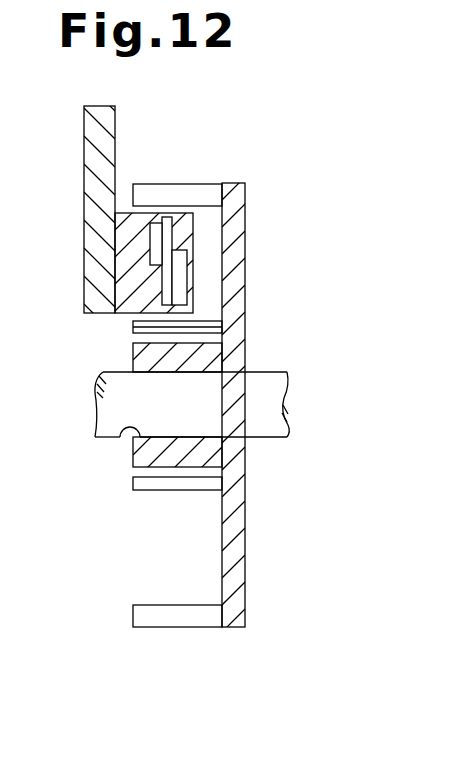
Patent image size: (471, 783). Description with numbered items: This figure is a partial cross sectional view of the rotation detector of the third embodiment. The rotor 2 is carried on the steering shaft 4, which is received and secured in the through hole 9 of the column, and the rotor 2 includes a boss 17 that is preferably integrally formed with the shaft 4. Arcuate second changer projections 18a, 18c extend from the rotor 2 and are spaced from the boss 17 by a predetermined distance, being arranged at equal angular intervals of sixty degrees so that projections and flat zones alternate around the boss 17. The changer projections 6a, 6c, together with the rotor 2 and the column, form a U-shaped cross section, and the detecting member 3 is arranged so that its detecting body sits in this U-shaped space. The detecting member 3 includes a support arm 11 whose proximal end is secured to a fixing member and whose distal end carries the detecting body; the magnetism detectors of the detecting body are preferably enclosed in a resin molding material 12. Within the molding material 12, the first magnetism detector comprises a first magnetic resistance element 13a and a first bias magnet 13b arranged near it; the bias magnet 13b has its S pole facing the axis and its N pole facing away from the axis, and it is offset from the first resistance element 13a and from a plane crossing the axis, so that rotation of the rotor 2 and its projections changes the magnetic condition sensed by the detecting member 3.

The rotor 2 is at (246, 197).
The detecting member 3 is at (82, 161).
The steering shaft 4 is at (263, 439).
The changer projection 6a is at (181, 188).
The changer projection 6c is at (178, 628).
The through hole 9 is at (125, 440).
The support arm 11 is at (86, 119).
The resin molding material 12 is at (120, 237).
The first magnetic resistance element 13a is at (148, 262).
The first bias magnet 13b is at (188, 268).
The boss 17 is at (133, 352).
The second changer projection 18a is at (214, 321).
The second changer projection 18c is at (170, 492).